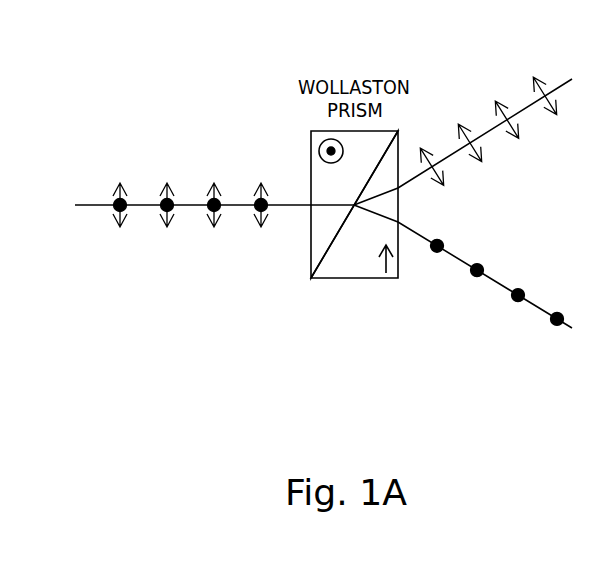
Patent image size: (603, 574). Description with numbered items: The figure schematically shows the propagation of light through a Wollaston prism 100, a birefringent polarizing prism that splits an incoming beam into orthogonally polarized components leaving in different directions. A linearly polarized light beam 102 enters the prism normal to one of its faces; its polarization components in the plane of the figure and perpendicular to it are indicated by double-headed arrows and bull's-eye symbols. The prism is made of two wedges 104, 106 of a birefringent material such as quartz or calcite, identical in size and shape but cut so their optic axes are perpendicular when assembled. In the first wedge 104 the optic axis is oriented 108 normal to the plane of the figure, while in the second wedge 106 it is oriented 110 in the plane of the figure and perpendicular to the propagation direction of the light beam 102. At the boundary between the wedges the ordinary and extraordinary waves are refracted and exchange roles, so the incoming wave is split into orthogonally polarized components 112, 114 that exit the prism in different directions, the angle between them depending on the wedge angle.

The Wollaston prism 100 is at (183, 133).
The linearly polarized light beam 102 is at (92, 217).
The first wedge 104 is at (320, 247).
The second wedge 106 is at (335, 265).
The optic axis orientation of first wedge 108 is at (318, 139).
The optic axis orientation of second wedge 110 is at (378, 263).
The first orthogonally polarized component 112 is at (523, 103).
The second orthogonally polarized component 114 is at (535, 313).